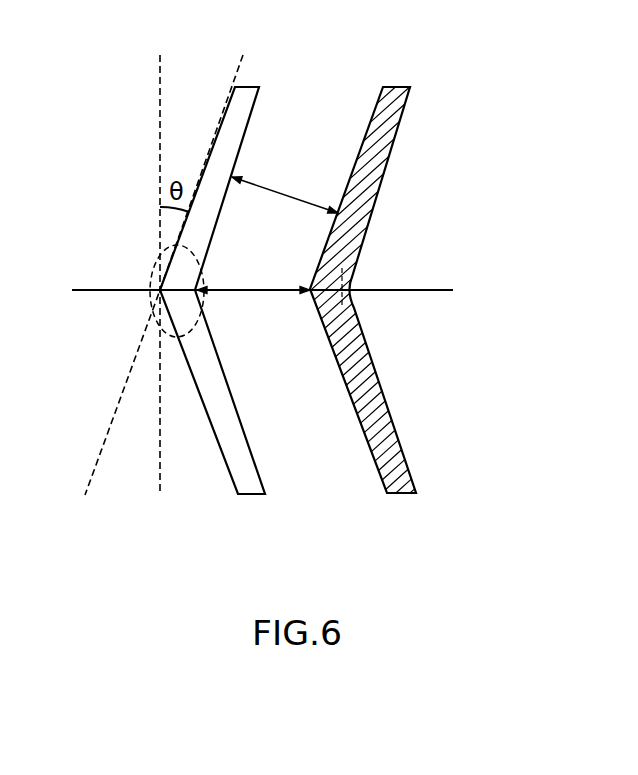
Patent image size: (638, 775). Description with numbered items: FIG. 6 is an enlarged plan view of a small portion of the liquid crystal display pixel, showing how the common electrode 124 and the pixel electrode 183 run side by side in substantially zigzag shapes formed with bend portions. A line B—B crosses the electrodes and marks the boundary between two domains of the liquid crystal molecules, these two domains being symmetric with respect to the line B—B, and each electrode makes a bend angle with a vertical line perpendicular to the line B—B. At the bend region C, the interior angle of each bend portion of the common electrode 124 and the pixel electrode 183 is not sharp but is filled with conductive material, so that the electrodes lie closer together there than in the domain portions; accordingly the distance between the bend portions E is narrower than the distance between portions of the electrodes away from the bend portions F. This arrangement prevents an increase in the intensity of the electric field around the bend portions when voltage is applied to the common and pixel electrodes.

The common electrode 124 is at (243, 110).
The pixel electrode 183 is at (393, 132).
The line B— B is at (268, 292).
The bend region C is at (200, 282).
The distance between the bend portions E is at (253, 277).
The distance between portions of the electrodes away from the bend portions F is at (285, 188).